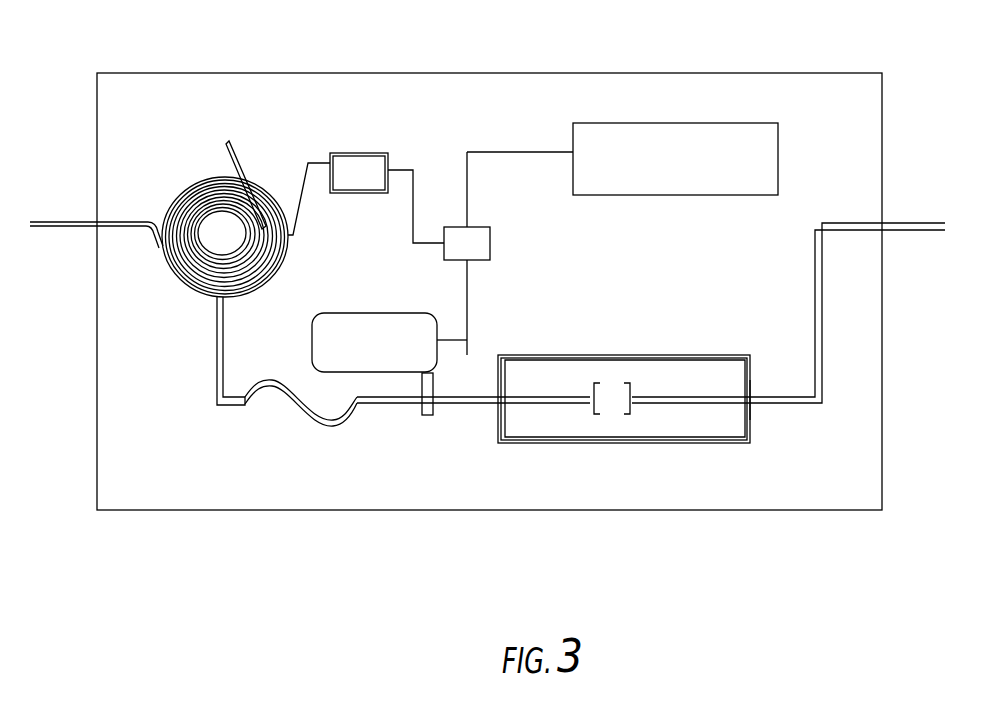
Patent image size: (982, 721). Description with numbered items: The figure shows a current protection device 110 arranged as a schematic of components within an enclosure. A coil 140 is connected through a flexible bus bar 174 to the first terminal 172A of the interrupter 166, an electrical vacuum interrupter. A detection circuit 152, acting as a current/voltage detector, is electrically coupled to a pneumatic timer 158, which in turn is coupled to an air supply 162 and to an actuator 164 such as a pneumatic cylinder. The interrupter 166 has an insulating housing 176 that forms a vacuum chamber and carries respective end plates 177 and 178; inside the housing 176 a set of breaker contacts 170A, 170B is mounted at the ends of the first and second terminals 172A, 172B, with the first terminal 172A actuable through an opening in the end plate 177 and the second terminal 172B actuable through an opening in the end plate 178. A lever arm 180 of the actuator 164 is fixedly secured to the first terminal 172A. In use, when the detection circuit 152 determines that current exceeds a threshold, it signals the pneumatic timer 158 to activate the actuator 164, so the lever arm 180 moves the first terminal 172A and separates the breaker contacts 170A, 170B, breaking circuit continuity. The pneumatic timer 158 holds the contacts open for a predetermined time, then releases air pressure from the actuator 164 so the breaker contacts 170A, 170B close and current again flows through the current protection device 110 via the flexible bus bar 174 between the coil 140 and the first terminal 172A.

The current protection device 110 is at (228, 58).
The coil 140 is at (190, 160).
The detection circuit 152 is at (371, 153).
The pneumatic timer 158 is at (490, 245).
The air supply 162 is at (663, 123).
The actuator 164 is at (365, 313).
The interrupter 166 is at (632, 340).
The breaker contact 170A is at (590, 412).
The breaker contact 170B is at (632, 412).
The first terminal 172A is at (456, 405).
The second terminal 172B is at (777, 405).
The flexible bus bar 174 is at (286, 385).
The housing 176 is at (722, 355).
The end plate 177 is at (498, 370).
The end plate 178 is at (750, 367).
The lever arm 180 is at (427, 415).